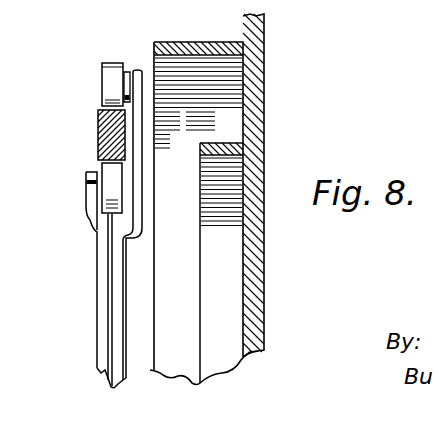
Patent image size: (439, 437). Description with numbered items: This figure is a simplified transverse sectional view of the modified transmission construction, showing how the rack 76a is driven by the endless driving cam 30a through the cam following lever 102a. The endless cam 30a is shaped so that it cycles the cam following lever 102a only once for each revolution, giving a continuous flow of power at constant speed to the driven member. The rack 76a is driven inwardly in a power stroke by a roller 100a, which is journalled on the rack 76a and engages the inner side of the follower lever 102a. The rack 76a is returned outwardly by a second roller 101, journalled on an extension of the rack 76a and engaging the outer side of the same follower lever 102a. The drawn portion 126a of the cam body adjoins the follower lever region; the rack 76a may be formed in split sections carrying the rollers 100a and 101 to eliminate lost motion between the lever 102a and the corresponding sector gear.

The endless driving cam 30a is at (191, 54).
The inner step of housing 126a is at (230, 147).
The rack 76a is at (102, 317).
The second roller 101 is at (113, 62).
The cam following lever 102a is at (104, 138).
The roller 100a is at (105, 197).